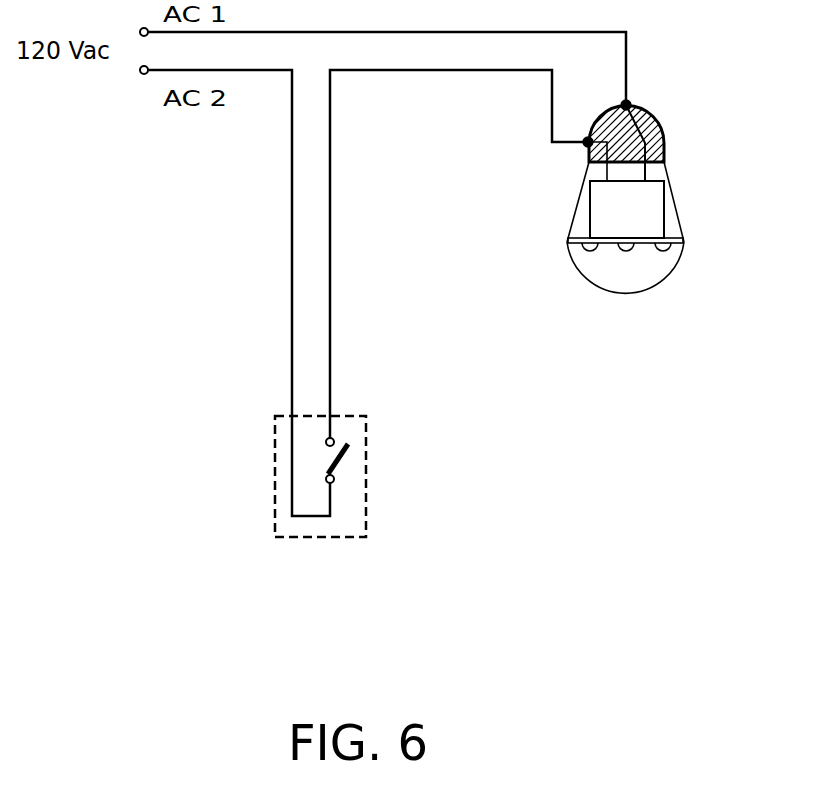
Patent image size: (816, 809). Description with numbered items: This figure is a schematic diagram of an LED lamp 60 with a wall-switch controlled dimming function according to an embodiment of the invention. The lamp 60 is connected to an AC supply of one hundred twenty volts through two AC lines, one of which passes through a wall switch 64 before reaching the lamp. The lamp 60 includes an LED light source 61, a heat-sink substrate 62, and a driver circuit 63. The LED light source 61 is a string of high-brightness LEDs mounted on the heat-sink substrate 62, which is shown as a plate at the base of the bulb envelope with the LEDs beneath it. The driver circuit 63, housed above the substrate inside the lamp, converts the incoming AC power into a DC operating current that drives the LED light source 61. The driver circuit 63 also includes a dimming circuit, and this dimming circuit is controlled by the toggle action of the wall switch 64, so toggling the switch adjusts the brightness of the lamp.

The LED lamp 60 is at (634, 217).
The LED light source 61 is at (625, 256).
The heat-sink substrate 62 is at (683, 241).
The driver circuit 63 is at (653, 219).
The wall switch 64 is at (366, 479).